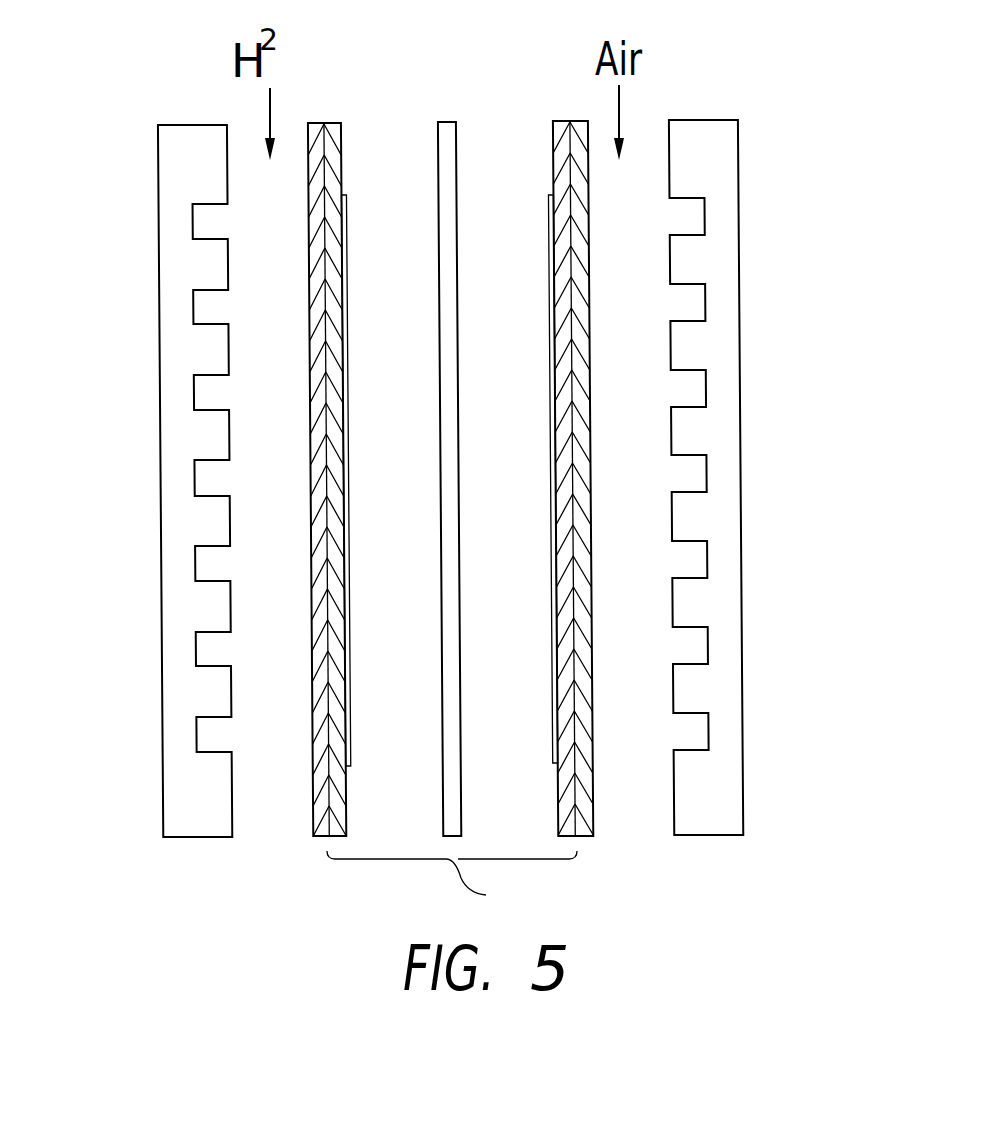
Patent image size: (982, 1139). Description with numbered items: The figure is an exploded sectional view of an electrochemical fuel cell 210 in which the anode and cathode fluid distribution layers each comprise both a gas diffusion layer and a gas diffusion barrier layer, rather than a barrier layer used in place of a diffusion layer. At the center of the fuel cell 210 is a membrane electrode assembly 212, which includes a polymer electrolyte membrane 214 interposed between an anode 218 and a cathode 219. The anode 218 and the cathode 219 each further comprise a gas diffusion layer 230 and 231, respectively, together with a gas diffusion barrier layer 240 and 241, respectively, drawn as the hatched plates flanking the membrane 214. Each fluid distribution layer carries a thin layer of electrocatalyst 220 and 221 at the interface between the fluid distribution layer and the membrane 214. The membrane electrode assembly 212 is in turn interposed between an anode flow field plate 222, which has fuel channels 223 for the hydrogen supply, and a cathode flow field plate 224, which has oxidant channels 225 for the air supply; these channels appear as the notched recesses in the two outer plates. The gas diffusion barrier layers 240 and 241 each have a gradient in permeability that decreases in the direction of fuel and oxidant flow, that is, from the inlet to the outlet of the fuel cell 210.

The fuel cell 210 is at (706, 116).
The membrane electrode assembly 212 is at (449, 517).
The polymer electrolyte membrane 214 is at (445, 842).
The anode 218 is at (322, 844).
The cathode 219 is at (583, 850).
The electrocatalyst layer 220 is at (346, 263).
The electrocatalyst layer 221 is at (550, 217).
The anode flow field plate 222 is at (178, 820).
The fuel channels 223 is at (207, 647).
The cathode flow field plate 224 is at (712, 817).
The oxidant channels 225 is at (692, 733).
The gas diffusion layer 230 is at (332, 441).
The gas diffusion layer 231 is at (549, 446).
The gas diffusion barrier layer 240 is at (320, 257).
The gas diffusion barrier layer 241 is at (580, 220).